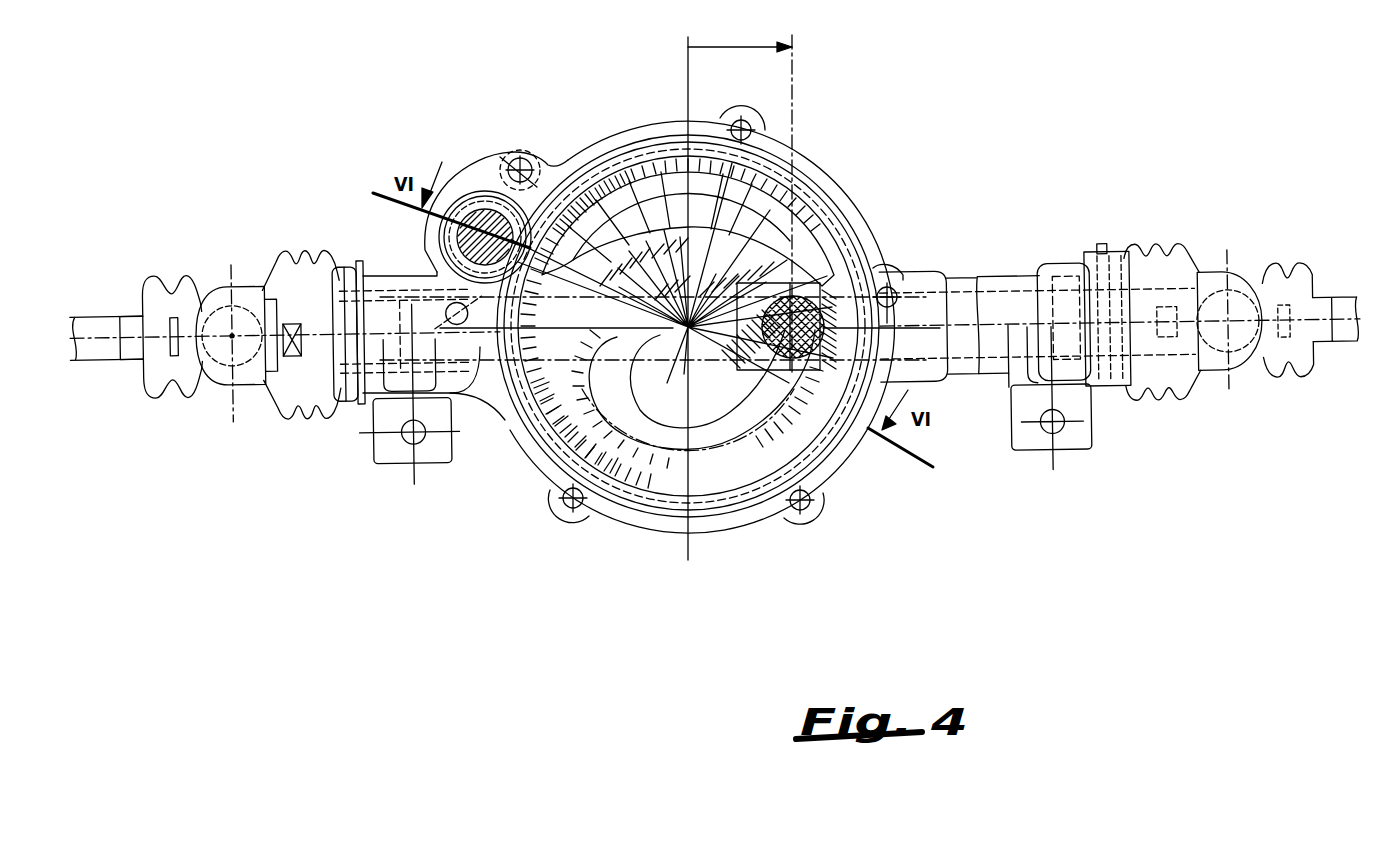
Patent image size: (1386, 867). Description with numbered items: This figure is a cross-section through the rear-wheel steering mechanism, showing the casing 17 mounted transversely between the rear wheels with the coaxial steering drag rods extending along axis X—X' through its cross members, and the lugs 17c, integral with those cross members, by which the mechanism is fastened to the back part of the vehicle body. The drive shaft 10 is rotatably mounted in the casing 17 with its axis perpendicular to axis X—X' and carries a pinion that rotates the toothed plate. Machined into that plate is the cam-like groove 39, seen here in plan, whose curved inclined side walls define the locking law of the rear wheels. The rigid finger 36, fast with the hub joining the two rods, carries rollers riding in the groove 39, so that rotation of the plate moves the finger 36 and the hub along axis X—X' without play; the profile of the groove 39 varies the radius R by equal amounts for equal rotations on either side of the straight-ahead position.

The drive shaft 10 is at (480, 223).
The casing 17 is at (855, 220).
The lugs 17c is at (422, 447).
The rigid finger 36 is at (817, 293).
The cam-like groove 39 is at (633, 196).